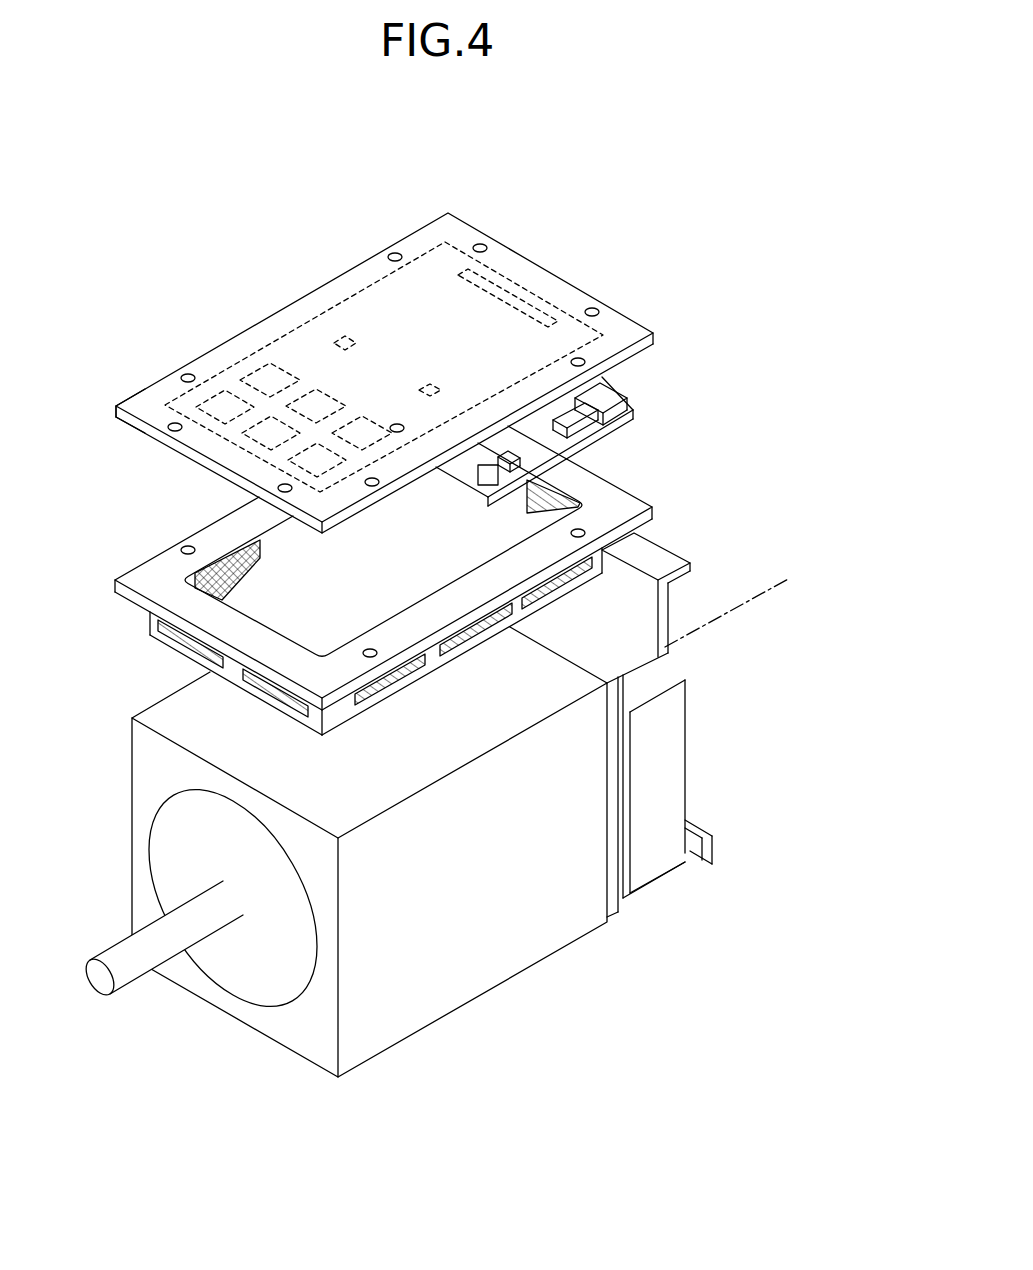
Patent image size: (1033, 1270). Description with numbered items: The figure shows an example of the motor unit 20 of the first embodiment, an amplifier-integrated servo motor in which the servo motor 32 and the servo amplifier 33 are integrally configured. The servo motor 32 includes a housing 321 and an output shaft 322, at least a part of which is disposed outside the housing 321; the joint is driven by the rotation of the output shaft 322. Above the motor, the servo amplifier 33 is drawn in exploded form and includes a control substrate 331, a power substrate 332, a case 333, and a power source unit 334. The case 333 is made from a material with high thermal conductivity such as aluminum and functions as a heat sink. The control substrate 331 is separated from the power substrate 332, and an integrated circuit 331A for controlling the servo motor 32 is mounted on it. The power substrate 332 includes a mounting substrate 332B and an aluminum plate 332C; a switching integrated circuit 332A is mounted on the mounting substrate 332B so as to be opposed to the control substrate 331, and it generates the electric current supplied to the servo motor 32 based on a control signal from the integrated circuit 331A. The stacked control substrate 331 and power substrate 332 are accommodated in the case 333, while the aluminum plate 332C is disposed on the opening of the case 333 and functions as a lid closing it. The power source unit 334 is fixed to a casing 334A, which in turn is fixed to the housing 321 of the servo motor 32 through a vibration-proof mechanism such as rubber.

The motor unit 20 is at (431, 636).
The servo motor 32 is at (339, 863).
The housing 321 is at (290, 1037).
The output shaft 322 is at (110, 957).
The servo amplifier 33 is at (412, 353).
The control substrate 331 is at (594, 424).
The integrated circuit (IC) 331A is at (577, 418).
The power substrate 332 is at (362, 353).
The switching integrated circuit (IC) 332A is at (260, 372).
The mounting substrate 332B is at (360, 287).
The aluminum plate 332C is at (145, 380).
The case 333 is at (655, 510).
The power source unit 334 is at (686, 755).
The casing 334A is at (650, 900).